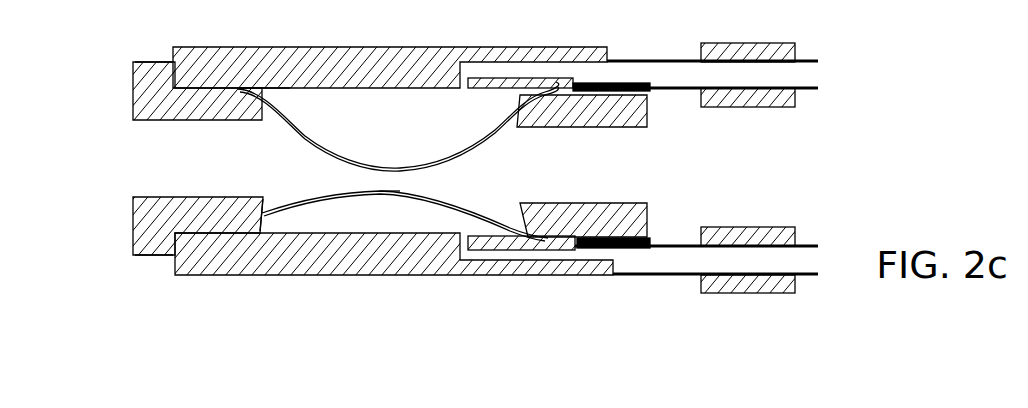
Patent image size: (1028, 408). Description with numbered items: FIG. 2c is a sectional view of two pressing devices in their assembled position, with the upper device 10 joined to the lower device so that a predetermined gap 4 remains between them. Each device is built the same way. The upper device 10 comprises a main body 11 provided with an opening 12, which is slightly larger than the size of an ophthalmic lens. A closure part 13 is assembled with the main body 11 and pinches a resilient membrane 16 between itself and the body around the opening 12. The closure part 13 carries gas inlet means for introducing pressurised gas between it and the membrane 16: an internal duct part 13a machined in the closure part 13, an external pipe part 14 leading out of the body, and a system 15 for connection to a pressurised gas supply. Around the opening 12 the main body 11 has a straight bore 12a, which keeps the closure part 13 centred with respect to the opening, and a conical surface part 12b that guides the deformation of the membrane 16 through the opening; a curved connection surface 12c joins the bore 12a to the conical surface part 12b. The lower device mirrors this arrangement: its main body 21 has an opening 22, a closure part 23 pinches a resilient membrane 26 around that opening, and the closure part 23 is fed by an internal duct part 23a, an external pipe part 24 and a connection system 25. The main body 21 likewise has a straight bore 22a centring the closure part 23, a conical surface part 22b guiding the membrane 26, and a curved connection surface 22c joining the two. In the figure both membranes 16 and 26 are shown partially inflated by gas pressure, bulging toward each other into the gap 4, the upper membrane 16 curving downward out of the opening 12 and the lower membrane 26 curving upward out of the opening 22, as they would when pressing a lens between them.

The pressing device 10 is at (938, 0).
The main body 11 is at (133, 88).
The opening 12 is at (380, 117).
The straight bore 12a is at (153, 62).
The conical surface part 12b is at (512, 132).
The curved connection surface 12c is at (262, 75).
The closure part 13 is at (417, 70).
The internal duct part 13a is at (513, 72).
The external pipe part 14 is at (653, 62).
The connection system 15 is at (743, 43).
The resilient membrane 16 is at (336, 158).
The main body 21 is at (133, 215).
The opening 22 is at (422, 220).
The straight bore 22a is at (157, 255).
The conical surface part 22b is at (268, 215).
The curved connection surface 22c is at (547, 202).
The closure part 23 is at (316, 253).
The internal duct part 23a is at (508, 258).
The external pipe part 24 is at (647, 277).
The connection system 25 is at (748, 292).
The resilient membrane 26 is at (328, 196).
The gap 4 is at (392, 183).